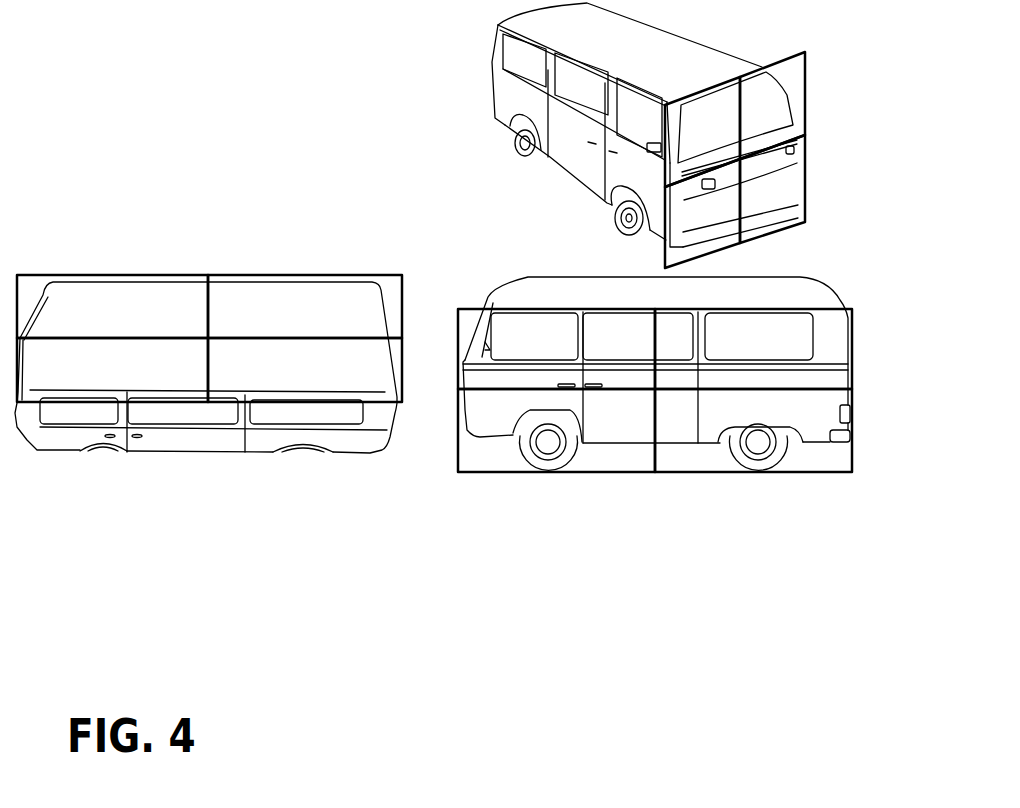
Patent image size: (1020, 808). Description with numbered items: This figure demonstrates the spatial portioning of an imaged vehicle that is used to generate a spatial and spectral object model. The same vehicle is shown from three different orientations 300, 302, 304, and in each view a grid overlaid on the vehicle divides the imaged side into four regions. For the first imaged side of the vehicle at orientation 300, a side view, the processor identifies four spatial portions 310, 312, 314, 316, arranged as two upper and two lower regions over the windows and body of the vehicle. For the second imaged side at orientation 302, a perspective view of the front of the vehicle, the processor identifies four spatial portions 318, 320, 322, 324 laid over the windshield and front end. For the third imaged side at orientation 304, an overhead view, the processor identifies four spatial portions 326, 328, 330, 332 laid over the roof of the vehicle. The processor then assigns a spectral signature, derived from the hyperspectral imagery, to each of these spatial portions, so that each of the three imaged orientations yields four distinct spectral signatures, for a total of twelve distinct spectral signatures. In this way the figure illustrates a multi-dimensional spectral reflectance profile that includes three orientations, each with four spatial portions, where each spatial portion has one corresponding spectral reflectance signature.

The orientation 300 is at (475, 256).
The orientation 302 is at (760, 30).
The orientation 304 is at (65, 238).
The spatial portion 310 is at (537, 354).
The spatial portion 312 is at (741, 354).
The spatial portion 314 is at (602, 434).
The spatial portion 316 is at (717, 423).
The spatial portion 318 is at (693, 144).
The spatial portion 320 is at (761, 123).
The spatial portion 322 is at (695, 222).
The spatial portion 324 is at (765, 204).
The spatial portion 326 is at (110, 321).
The spatial portion 328 is at (288, 321).
The spatial portion 330 is at (115, 381).
The spatial portion 332 is at (300, 381).